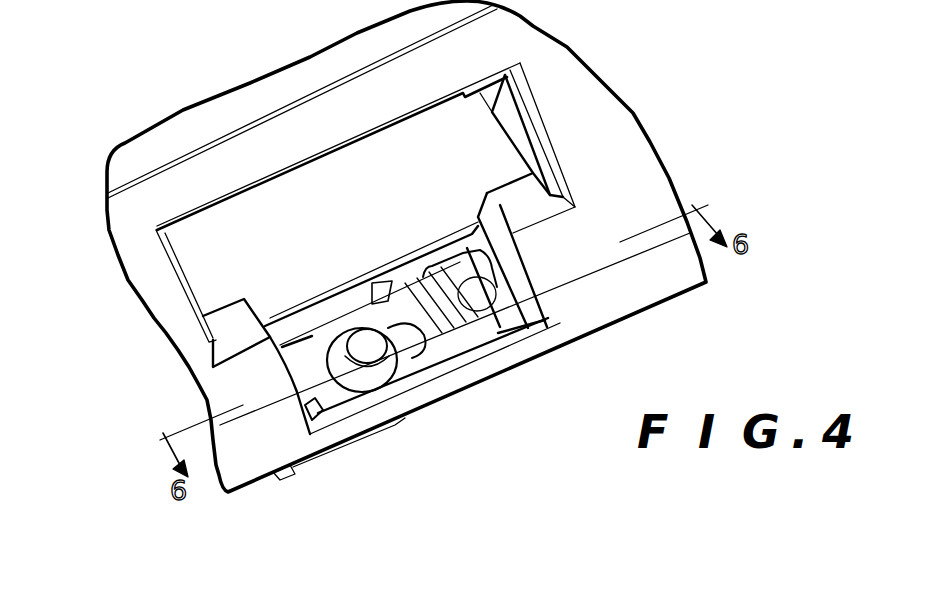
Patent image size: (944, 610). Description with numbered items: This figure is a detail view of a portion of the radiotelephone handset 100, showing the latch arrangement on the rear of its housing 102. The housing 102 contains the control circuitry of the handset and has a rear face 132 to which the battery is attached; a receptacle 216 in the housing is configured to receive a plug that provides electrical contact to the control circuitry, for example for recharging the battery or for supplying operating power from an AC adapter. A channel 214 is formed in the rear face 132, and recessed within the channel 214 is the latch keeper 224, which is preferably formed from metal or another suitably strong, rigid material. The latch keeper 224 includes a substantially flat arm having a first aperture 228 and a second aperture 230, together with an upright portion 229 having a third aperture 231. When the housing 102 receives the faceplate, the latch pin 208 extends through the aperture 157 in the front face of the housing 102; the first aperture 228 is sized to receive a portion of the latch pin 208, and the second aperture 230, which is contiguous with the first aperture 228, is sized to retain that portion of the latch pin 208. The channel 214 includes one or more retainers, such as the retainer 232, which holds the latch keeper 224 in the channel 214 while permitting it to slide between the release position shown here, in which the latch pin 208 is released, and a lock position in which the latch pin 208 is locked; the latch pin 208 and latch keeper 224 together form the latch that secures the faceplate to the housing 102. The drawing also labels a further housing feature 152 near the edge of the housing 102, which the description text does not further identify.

The radiotelephone handset 100 is at (257, 482).
The housing 102 is at (690, 266).
The rear face 132 is at (620, 153).
The front rim 152 is at (678, 296).
The aperture 157 is at (392, 372).
The latch pin 208 is at (385, 355).
The channel 214 is at (496, 238).
The receptacle 216 is at (201, 270).
The latch keeper 224 is at (540, 330).
The first aperture 228 is at (358, 378).
The upright portion 229 is at (502, 330).
The second aperture 230 is at (400, 352).
The third aperture 231 is at (470, 279).
The retainer 232 is at (388, 283).